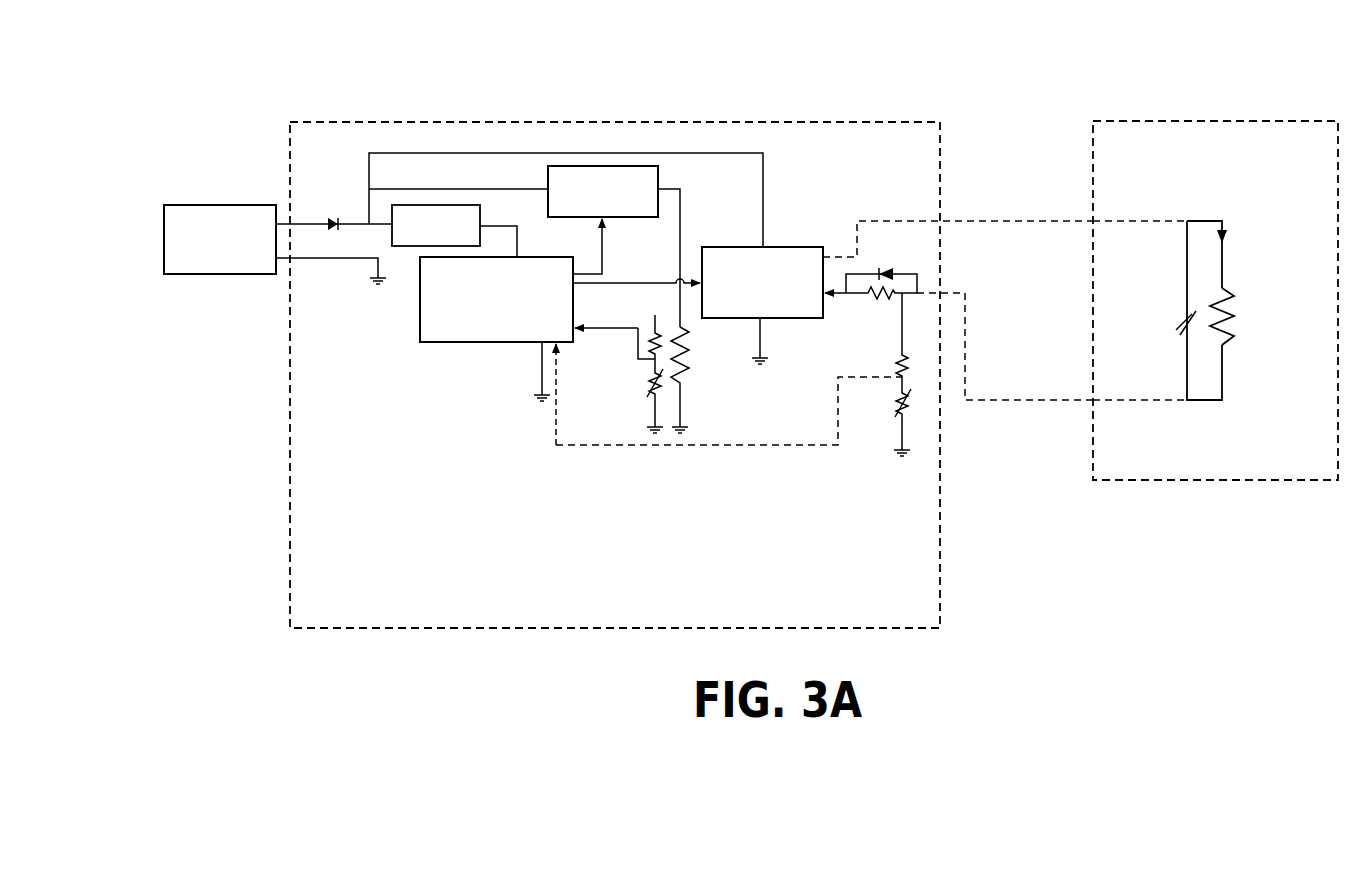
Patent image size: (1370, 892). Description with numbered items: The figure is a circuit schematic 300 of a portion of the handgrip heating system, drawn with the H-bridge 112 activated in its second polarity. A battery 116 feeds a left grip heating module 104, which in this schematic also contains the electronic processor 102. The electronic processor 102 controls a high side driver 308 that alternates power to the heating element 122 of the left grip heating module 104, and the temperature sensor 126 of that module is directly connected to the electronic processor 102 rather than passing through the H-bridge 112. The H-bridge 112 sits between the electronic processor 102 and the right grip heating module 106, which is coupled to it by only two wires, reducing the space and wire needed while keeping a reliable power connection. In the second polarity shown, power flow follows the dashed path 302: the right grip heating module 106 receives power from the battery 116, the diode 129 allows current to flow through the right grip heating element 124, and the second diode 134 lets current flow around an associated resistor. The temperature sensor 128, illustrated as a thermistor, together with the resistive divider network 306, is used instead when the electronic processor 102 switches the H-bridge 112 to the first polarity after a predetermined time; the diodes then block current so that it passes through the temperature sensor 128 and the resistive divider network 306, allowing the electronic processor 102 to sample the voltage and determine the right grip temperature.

The circuit schematic 300 is at (265, 133).
The battery 116 is at (220, 239).
The left grip heating module 104 is at (684, 336).
The right grip heating module 106 is at (1215, 300).
The electronic processor 102 is at (496, 299).
The H-bridge 112 is at (762, 282).
The high side driver 308 is at (598, 164).
The heating element 122 is at (697, 378).
The temperature sensor 126 is at (639, 383).
The second diode 134 is at (884, 246).
The dashed path 302 is at (992, 219).
The resistive divider network 306 is at (920, 406).
The diode 129 is at (1227, 245).
The heating element 124 is at (1239, 318).
The temperature sensor 128 is at (1171, 319).